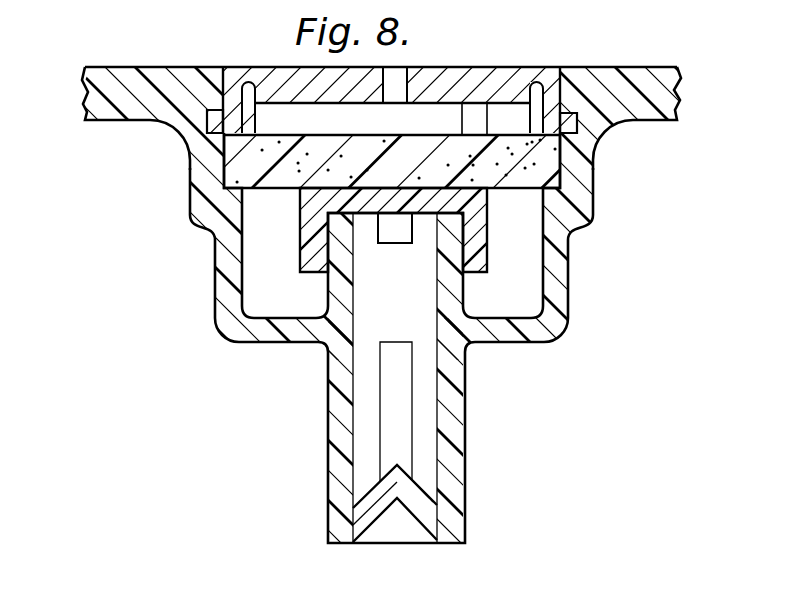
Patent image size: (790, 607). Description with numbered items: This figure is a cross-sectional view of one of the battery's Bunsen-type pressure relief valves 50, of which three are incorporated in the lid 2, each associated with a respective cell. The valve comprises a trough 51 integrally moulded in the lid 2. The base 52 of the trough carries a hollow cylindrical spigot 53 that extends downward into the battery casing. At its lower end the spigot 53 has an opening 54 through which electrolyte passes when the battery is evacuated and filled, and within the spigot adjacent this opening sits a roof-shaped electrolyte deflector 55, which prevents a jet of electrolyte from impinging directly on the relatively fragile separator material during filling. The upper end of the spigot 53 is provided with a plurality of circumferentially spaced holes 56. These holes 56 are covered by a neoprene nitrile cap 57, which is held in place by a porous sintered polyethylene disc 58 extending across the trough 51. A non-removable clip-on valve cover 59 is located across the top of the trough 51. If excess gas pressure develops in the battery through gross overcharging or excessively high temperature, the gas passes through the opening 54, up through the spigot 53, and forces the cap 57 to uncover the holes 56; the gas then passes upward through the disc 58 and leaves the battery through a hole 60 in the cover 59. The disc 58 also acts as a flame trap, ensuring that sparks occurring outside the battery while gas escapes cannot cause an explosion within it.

The lid 2 is at (128, 122).
The pressure relief valve 50 is at (257, 57).
The trough 51 is at (200, 212).
The base 52 is at (270, 343).
The spigot 53 is at (327, 298).
The opening 54 is at (410, 453).
The electrolyte deflector 55 is at (425, 512).
The holes 56 is at (400, 233).
The cap 57 is at (483, 215).
The disc 58 is at (547, 170).
The valve cover 59 is at (490, 68).
The hole 60 is at (390, 73).